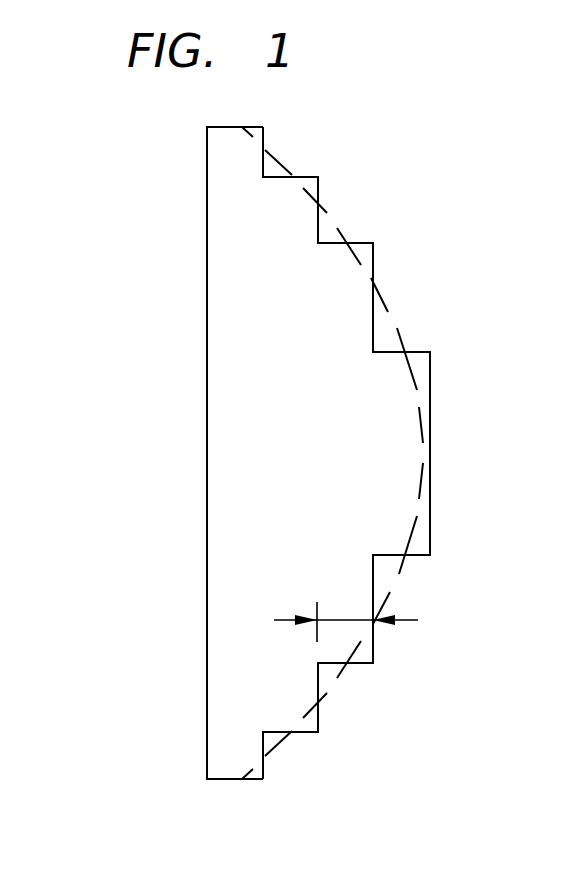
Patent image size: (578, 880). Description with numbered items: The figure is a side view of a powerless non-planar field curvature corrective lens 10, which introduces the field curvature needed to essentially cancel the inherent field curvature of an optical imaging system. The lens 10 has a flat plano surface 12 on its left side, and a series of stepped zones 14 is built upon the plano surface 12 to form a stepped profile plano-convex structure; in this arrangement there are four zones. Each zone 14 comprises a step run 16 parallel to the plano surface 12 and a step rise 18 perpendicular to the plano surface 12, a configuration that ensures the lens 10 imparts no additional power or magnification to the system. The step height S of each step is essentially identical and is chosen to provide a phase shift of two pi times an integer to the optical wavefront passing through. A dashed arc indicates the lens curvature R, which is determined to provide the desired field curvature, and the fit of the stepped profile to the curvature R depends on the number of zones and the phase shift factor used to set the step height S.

The field curvature corrective lens 10 is at (352, 476).
The plano surface 12 is at (207, 455).
The stepped zones 14 is at (373, 270).
The step run 16 is at (318, 207).
The step rise 18 is at (340, 246).
The lens curvature R is at (395, 331).
The step height S is at (418, 611).